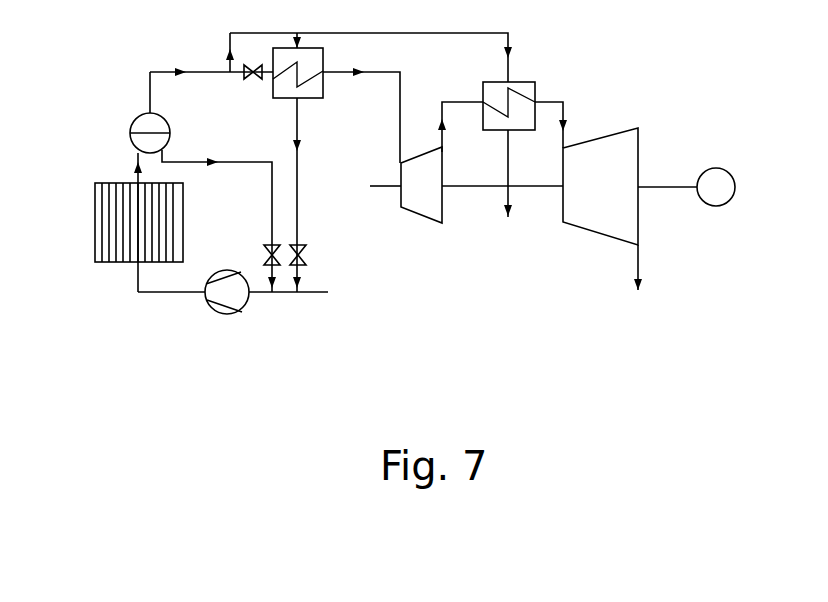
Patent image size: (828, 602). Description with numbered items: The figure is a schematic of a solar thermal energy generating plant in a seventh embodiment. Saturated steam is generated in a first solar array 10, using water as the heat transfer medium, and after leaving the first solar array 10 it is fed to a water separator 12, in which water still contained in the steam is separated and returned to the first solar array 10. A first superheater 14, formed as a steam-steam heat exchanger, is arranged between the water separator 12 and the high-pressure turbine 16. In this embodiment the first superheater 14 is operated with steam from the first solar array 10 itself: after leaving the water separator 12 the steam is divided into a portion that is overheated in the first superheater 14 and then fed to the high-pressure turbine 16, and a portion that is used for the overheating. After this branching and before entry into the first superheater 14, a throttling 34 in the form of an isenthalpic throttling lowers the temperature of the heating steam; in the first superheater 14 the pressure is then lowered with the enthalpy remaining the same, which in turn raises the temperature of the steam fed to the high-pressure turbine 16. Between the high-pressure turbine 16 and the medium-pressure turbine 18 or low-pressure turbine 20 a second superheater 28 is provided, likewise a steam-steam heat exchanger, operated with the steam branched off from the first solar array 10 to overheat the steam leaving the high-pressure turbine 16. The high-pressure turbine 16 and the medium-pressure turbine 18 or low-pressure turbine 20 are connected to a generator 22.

The first solar array 10 is at (100, 180).
The first water separator 12 is at (138, 115).
The first superheater 14 is at (323, 98).
The high-pressure turbine 16 is at (420, 217).
The medium-pressure turbine 18 is at (581, 219).
The low-pressure turbine 20 is at (583, 235).
The generator 22 is at (707, 168).
The second superheater 28 is at (525, 80).
The throttling 34 is at (250, 80).